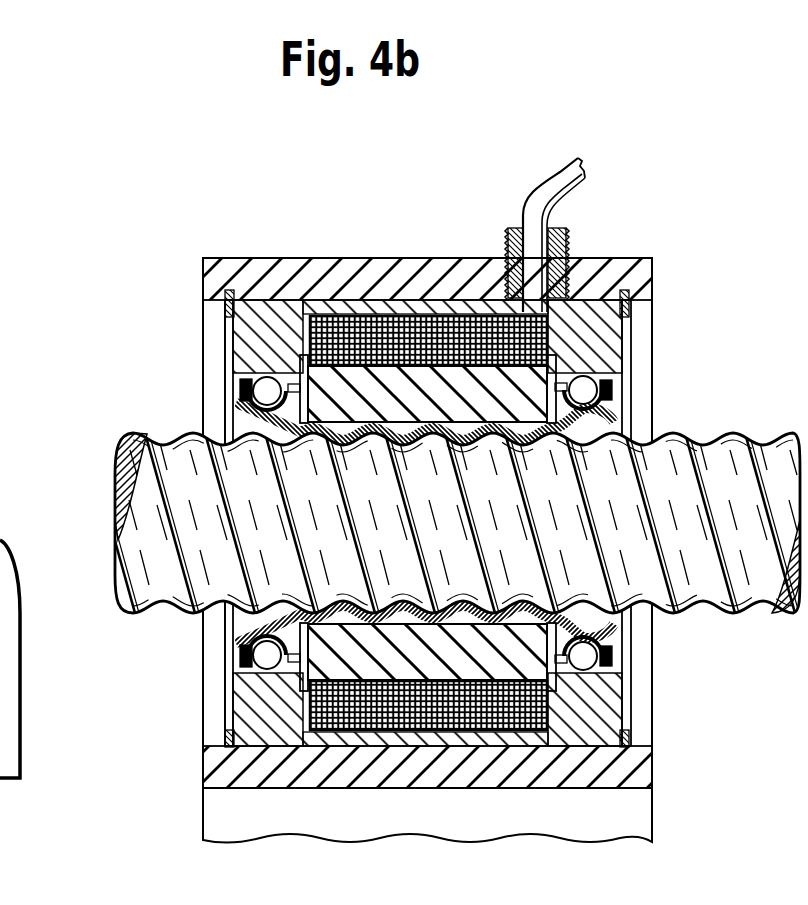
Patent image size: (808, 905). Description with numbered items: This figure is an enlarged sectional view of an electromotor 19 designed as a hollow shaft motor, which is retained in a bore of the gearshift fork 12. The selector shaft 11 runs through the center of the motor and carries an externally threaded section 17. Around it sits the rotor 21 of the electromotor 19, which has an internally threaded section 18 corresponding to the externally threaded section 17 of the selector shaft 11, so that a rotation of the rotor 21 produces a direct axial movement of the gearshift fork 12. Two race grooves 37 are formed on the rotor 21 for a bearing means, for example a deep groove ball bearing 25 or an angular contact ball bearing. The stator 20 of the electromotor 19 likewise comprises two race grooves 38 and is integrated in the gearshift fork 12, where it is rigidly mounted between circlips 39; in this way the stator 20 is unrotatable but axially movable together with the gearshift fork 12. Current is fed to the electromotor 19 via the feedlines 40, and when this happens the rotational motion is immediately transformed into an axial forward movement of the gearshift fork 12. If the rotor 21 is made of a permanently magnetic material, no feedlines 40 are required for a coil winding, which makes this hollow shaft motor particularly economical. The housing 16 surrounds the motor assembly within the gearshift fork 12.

The selector shaft 11 is at (446, 522).
The gearshift fork 12 is at (630, 814).
The housing 16 is at (390, 238).
The externally threaded section 17 is at (165, 440).
The internally threaded section 18 is at (250, 420).
The electromotor 19 is at (560, 707).
The stator 20 is at (346, 312).
The rotor 21 is at (455, 408).
The deep groove ball bearing 25 is at (265, 377).
The race grooves 37 is at (615, 425).
The race grooves 38 is at (600, 370).
The circlips 39 is at (227, 306).
The feedlines 40 is at (550, 182).